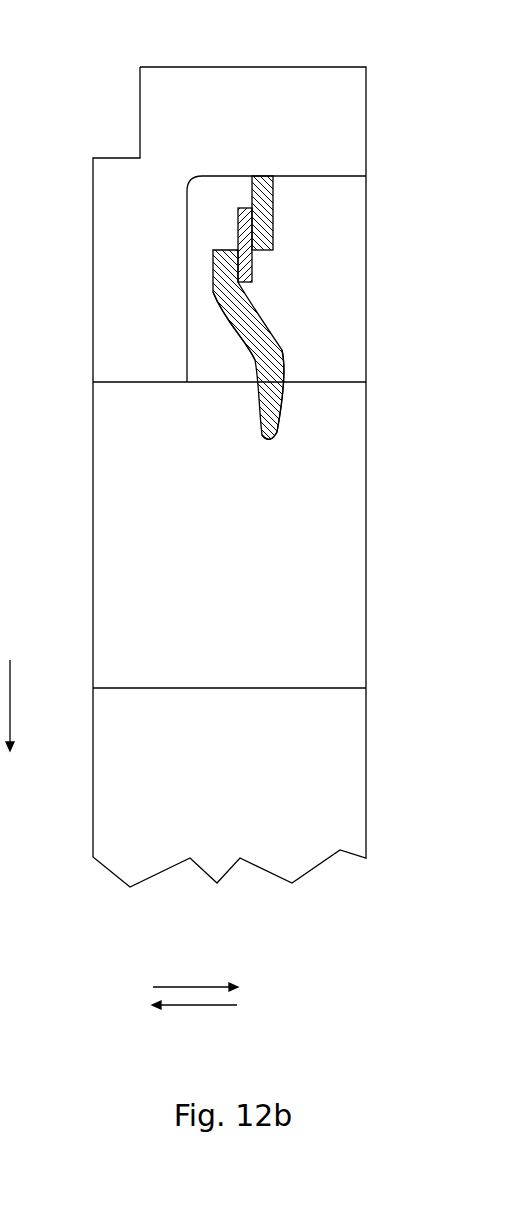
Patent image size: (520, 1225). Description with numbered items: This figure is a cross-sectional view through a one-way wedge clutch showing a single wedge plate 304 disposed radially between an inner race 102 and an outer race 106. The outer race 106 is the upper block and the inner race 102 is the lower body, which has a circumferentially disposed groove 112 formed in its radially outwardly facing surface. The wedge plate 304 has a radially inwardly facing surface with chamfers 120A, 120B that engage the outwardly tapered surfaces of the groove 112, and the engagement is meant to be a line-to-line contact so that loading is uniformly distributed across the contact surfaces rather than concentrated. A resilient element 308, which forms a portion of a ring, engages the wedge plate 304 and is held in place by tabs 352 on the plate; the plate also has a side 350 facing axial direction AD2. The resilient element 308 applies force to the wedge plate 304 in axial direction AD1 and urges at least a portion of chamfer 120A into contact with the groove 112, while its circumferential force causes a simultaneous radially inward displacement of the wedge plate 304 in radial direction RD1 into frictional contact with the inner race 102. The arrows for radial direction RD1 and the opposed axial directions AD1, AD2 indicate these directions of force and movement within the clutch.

The inner race 102 is at (196, 624).
The outer race 106 is at (258, 117).
The circumferentially disposed groove 112 is at (273, 452).
The chamfer 120A is at (257, 410).
The chamfer 120B is at (283, 393).
The wedge plate 304 is at (293, 300).
The resilient element 308 is at (242, 211).
The side 350 is at (376, 312).
The tabs 352 is at (225, 275).
The radial direction RD1 is at (10, 688).
The axial direction AD1 is at (194, 1005).
The axial direction AD2 is at (180, 987).